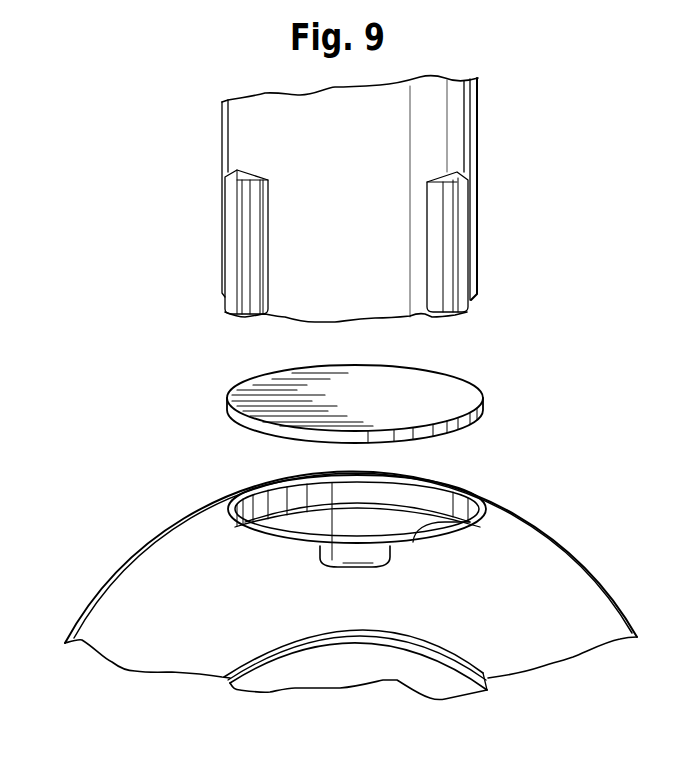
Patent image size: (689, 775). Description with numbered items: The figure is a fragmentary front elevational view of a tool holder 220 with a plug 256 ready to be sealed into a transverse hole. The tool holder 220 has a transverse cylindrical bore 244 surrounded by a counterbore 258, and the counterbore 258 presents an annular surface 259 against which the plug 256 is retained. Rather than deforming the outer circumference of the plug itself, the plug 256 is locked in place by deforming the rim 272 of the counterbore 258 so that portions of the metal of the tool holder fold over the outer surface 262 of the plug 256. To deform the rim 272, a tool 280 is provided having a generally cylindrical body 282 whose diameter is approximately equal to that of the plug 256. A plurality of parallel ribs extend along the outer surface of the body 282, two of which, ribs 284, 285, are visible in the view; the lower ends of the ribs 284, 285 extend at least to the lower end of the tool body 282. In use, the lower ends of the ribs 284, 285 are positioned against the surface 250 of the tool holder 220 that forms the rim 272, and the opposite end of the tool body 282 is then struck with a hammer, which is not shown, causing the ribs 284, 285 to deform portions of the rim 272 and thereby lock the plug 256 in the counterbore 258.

The tool holder 220 is at (323, 541).
The transverse cylindrical bore 244 is at (368, 475).
The surface of the tool holder 250 is at (125, 620).
The plug 256 is at (230, 393).
The counterbore 258 is at (283, 516).
The annular surface 259 is at (445, 505).
The outer surface of the plug 262 is at (352, 379).
The rim 272 is at (427, 521).
The tool 280 is at (361, 195).
The tool body 282 is at (485, 112).
The rib 284 is at (233, 222).
The rib 285 is at (460, 230).